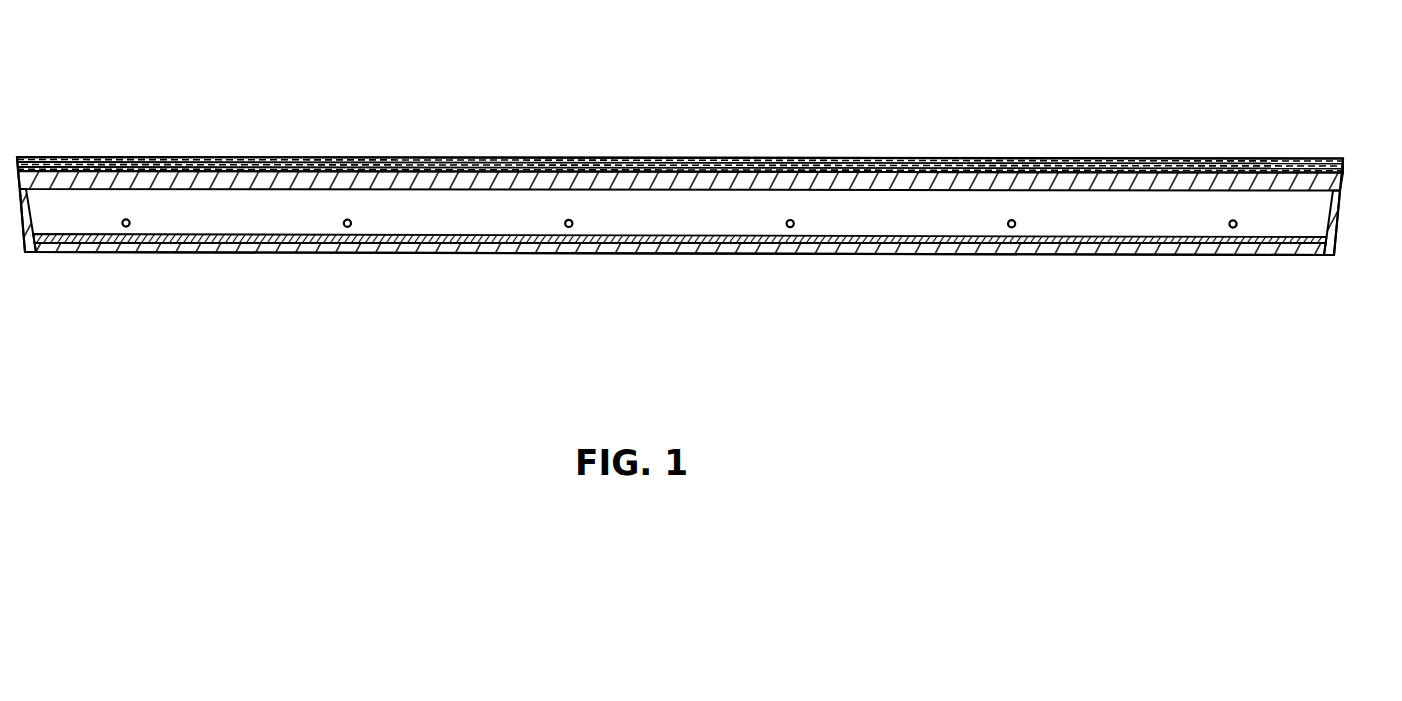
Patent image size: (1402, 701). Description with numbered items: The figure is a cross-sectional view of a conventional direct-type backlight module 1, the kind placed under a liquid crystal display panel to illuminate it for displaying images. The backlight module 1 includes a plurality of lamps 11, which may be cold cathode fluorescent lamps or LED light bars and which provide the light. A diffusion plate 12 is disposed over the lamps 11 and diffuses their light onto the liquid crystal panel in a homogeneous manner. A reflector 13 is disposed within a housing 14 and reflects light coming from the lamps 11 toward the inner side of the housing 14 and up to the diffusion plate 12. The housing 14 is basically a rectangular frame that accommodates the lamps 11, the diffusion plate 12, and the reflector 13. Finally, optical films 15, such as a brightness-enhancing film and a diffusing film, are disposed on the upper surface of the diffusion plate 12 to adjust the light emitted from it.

The backlight module 1 is at (700, 180).
The lamps 11 is at (1231, 232).
The diffusion plate 12 is at (1148, 185).
The reflector 13 is at (1283, 246).
The housing 14 is at (1150, 247).
The optical films 15 is at (1348, 157).